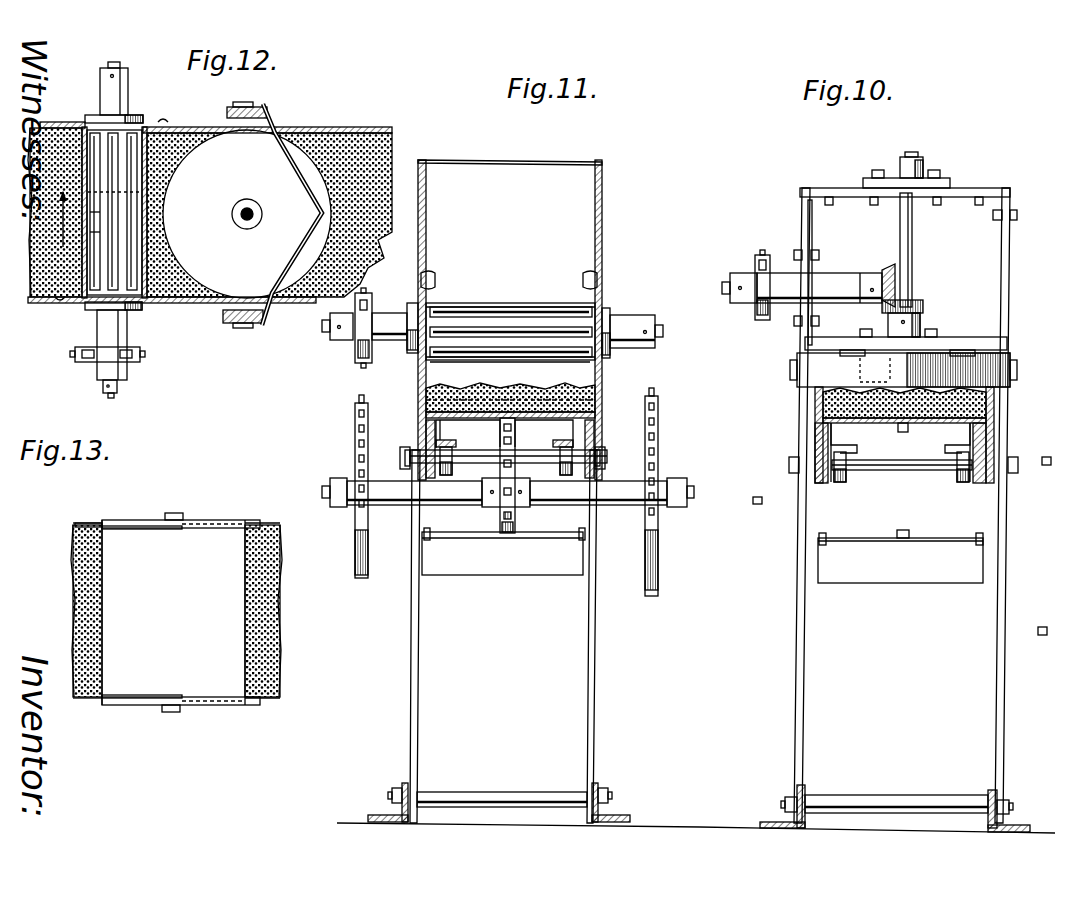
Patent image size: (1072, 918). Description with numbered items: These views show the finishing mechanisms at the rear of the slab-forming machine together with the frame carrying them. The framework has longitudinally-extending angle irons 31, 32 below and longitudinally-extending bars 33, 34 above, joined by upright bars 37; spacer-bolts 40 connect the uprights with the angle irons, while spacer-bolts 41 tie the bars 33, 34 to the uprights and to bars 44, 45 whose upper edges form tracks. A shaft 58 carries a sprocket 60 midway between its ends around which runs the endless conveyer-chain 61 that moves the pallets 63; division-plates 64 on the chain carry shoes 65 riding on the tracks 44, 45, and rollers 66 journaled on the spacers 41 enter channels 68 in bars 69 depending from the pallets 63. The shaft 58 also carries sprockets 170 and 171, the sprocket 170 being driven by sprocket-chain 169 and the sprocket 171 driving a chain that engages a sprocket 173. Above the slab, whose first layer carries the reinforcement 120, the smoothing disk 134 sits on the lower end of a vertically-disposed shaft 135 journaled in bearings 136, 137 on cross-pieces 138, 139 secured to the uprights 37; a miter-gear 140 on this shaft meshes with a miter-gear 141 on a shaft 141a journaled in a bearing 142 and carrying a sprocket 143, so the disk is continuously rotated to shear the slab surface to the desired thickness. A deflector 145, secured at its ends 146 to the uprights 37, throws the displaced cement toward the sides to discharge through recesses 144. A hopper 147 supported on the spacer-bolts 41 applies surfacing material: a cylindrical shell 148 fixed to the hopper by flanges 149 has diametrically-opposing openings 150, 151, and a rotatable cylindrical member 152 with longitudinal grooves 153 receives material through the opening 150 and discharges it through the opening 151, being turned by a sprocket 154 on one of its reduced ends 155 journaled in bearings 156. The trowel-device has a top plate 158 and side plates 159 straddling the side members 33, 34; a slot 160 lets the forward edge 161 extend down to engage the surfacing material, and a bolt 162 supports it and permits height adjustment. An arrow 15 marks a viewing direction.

In FIG. 12, the direction arrow of material feed 15 is at (48, 219).
In FIG. 11, the angle iron 31 is at (385, 815).
In FIG. 10, the angle iron 31 is at (772, 822).
In FIG. 11, the angle iron 32 is at (617, 815).
In FIG. 10, the angle iron 32 is at (1020, 825).
In FIG. 12, the longitudinally-extending bar 33 is at (298, 303).
In FIG. 11, the longitudinally-extending bar 33 is at (420, 485).
In FIG. 10, the longitudinally-extending bar 33 is at (815, 408).
In FIG. 13, the longitudinally-extending bar 33 is at (171, 633).
In FIG. 12, the longitudinally-extending bar 34 is at (84, 121).
In FIG. 11, the longitudinally-extending bar 34 is at (600, 488).
In FIG. 10, the longitudinally-extending bar 34 is at (994, 408).
In FIG. 13, the longitudinally-extending bar 34 is at (84, 523).
In FIG. 12, the upright bar 37 is at (264, 104).
In FIG. 11, the upright bar 37 is at (410, 608).
In FIG. 10, the upright bar 37 is at (802, 230).
In FIG. 11, the spacer-bolt 40 is at (497, 792).
In FIG. 10, the spacer-bolt 40 is at (903, 795).
In FIG. 11, the spacer-bolt 41 is at (508, 455).
In FIG. 10, the spacer-bolt 41 is at (888, 470).
In FIG. 11, the track bar 44 is at (410, 448).
In FIG. 10, the track bar 44 is at (825, 484).
In FIG. 11, the track bar 45 is at (602, 448).
In FIG. 10, the track bar 45 is at (985, 484).
In FIG. 11, the shaft 58 is at (335, 480).
In FIG. 11, the sprocket 60 is at (515, 508).
In FIG. 11, the endless conveyer-chain 61 is at (544, 434).
In FIG. 10, the endless conveyer-chain 61 is at (903, 432).
In FIG. 11, the pallet 63 is at (468, 434).
In FIG. 11, the division-plate 64 is at (502, 553).
In FIG. 10, the division-plate 64 is at (900, 556).
In FIG. 11, the shoe 65 is at (430, 532).
In FIG. 11, the roller 66 is at (451, 472).
In FIG. 10, the roller 66 is at (842, 483).
In FIG. 10, the channel 68 is at (846, 446).
In FIG. 11, the pallet bar 69 is at (427, 428).
In FIG. 10, the pallet bar 69 is at (815, 430).
In FIG. 11, the reinforcing member 120 is at (582, 384).
In FIG. 12, the smoothing disk 134 is at (140, 192).
In FIG. 12, the vertically-disposed shaft 135 is at (262, 215).
In FIG. 10, the vertically-disposed shaft 135 is at (912, 240).
In FIG. 10, the bearing 136 is at (920, 330).
In FIG. 10, the bearing 137 is at (920, 170).
In FIG. 10, the cross-piece 138 is at (955, 348).
In FIG. 10, the cross-piece 139 is at (853, 188).
In FIG. 10, the miter-gear 140 is at (918, 305).
In FIG. 10, the miter-gear 141 is at (887, 268).
In FIG. 10, the shaft 141a is at (722, 287).
In FIG. 10, the bearing 142 is at (828, 303).
In FIG. 10, the sprocket 143 is at (757, 315).
In FIG. 12, the recess 144 is at (308, 126).
In FIG. 12, the deflector 145 is at (304, 192).
In FIG. 10, the deflector 145 is at (1012, 355).
In FIG. 12, the deflector end 146 is at (227, 112).
In FIG. 11, the hopper 147 is at (575, 220).
In FIG. 12, the cylindrical shell 148 is at (176, 269).
In FIG. 12, the flange 149 is at (175, 114).
In FIG. 11, the flange 149 is at (423, 276).
In FIG. 11, the opening 150 is at (510, 303).
In FIG. 11, the opening 151 is at (472, 360).
In FIG. 12, the rotatable cylindrical member 152 is at (95, 228).
In FIG. 11, the rotatable cylindrical member 152 is at (480, 307).
In FIG. 12, the groove 153 is at (108, 203).
In FIG. 11, the groove 153 is at (538, 352).
In FIG. 12, the sprocket 154 is at (78, 360).
In FIG. 11, the sprocket 154 is at (360, 363).
In FIG. 12, the reduced end 155 is at (116, 392).
In FIG. 11, the reduced end 155 is at (328, 333).
In FIG. 12, the bearing 156 is at (120, 330).
In FIG. 11, the bearing 156 is at (393, 340).
In FIG. 13, the top plate 158 is at (232, 620).
In FIG. 13, the side plate 159 is at (232, 513).
In FIG. 13, the slot 160 is at (160, 530).
In FIG. 13, the forward edge 161 is at (104, 617).
In FIG. 13, the bolt 162 is at (175, 513).
In FIG. 10, the sprocket-chain 169 is at (1050, 462).
In FIG. 11, the sprocket 170 is at (658, 432).
In FIG. 11, the sprocket 171 is at (355, 436).
In FIG. 10, the sprocket 173 is at (753, 500).